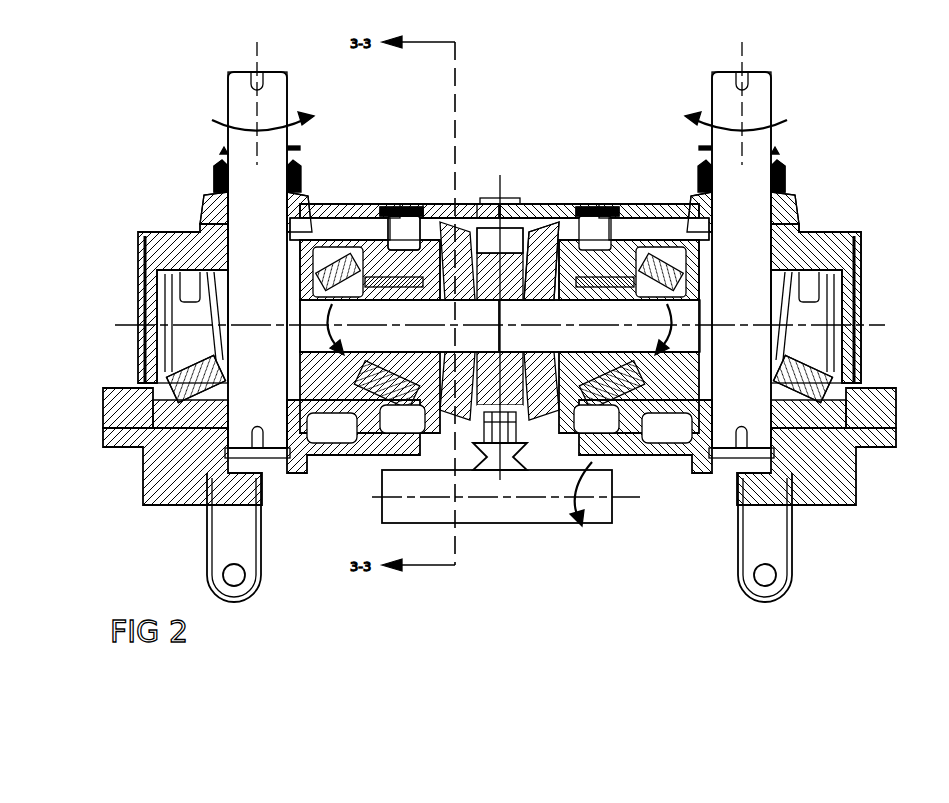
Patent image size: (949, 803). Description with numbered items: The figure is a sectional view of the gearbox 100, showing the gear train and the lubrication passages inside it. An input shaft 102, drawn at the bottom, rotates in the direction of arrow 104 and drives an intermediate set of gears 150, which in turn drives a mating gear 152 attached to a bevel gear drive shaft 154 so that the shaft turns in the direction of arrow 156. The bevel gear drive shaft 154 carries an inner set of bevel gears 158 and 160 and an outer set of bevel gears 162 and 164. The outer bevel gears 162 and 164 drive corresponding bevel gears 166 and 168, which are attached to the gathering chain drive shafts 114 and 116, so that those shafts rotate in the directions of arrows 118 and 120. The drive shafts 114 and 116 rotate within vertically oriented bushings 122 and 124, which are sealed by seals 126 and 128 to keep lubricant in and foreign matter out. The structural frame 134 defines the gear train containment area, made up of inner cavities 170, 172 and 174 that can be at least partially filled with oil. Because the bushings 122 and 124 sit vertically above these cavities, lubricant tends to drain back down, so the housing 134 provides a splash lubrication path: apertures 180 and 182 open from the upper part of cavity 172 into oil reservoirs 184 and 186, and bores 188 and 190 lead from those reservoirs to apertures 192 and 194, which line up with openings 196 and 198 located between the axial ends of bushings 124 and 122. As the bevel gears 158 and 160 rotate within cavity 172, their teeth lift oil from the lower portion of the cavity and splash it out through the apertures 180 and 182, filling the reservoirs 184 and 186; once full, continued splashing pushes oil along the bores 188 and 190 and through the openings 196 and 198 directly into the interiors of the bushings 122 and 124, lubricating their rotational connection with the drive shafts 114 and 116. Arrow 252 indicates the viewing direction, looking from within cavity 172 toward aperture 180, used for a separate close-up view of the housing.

The gearbox 100 is at (601, 82).
The input shaft 102 is at (612, 512).
The arrow 104 is at (612, 486).
The gathering chain drive shaft 114 is at (717, 72).
The gathering chain drive shaft 116 is at (228, 100).
The arrow 118 is at (790, 119).
The arrow 120 is at (212, 121).
The bushing 122 is at (792, 197).
The bushing 124 is at (205, 217).
The seal 126 is at (787, 167).
The seal 128 is at (220, 167).
The structural frame 134 is at (862, 242).
The intermediate set of gears 150 is at (523, 422).
The mating gear 152 is at (517, 412).
The bevel gear drive shaft 154 is at (581, 346).
The arrow 156 is at (335, 323).
The inner bevel gear 158 is at (552, 250).
The inner bevel gear 160 is at (450, 212).
The outer bevel gear 162 is at (700, 300).
The outer bevel gear 164 is at (333, 280).
The bevel gear 166 is at (822, 380).
The bevel gear 168 is at (183, 383).
The inner cavity 170 is at (206, 318).
The inner cavity 172 is at (512, 243).
The inner cavity 174 is at (818, 295).
The aperture 180 is at (432, 220).
The aperture 182 is at (587, 227).
The oil reservoir 184 is at (407, 240).
The oil reservoir 186 is at (613, 250).
The bore 188 is at (331, 231).
The bore 190 is at (682, 232).
The aperture 192 is at (309, 217).
The aperture 194 is at (707, 223).
The opening 196 is at (289, 234).
The opening 198 is at (713, 226).
The arrow 252 is at (610, 121).